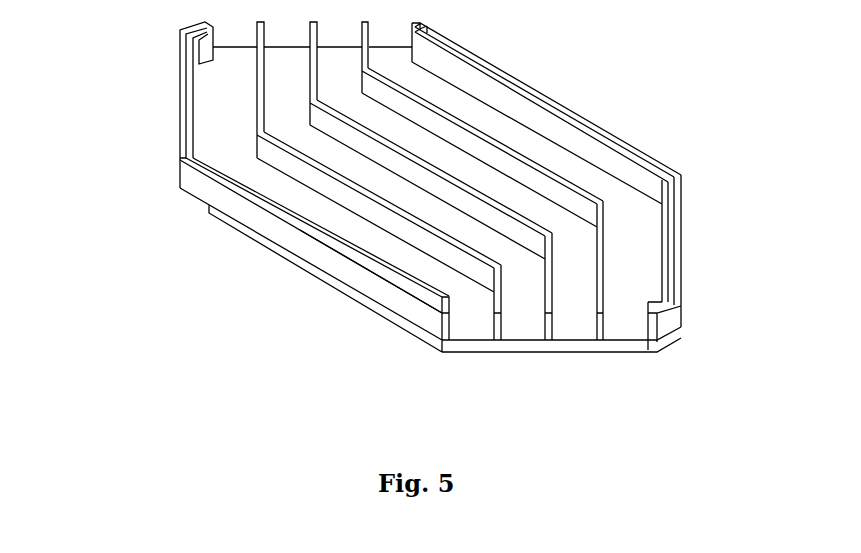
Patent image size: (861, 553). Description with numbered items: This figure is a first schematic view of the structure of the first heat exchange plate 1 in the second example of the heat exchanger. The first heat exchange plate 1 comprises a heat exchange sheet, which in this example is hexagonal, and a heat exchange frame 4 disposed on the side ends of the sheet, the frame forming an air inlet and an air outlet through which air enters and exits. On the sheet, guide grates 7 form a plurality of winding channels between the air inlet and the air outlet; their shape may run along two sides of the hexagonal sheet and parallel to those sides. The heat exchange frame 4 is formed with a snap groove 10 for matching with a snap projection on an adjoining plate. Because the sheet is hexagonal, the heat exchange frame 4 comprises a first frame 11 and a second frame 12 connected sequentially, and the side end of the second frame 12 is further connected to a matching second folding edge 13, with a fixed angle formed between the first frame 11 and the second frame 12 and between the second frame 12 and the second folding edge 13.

The first heat exchange plate 1 is at (222, 225).
The heat exchange frame 4 is at (180, 133).
The guide grates 7 is at (598, 196).
The snap groove 10 is at (405, 278).
The first frame 11 is at (532, 90).
The second frame 12 is at (675, 219).
The second folding edge 13 is at (660, 311).